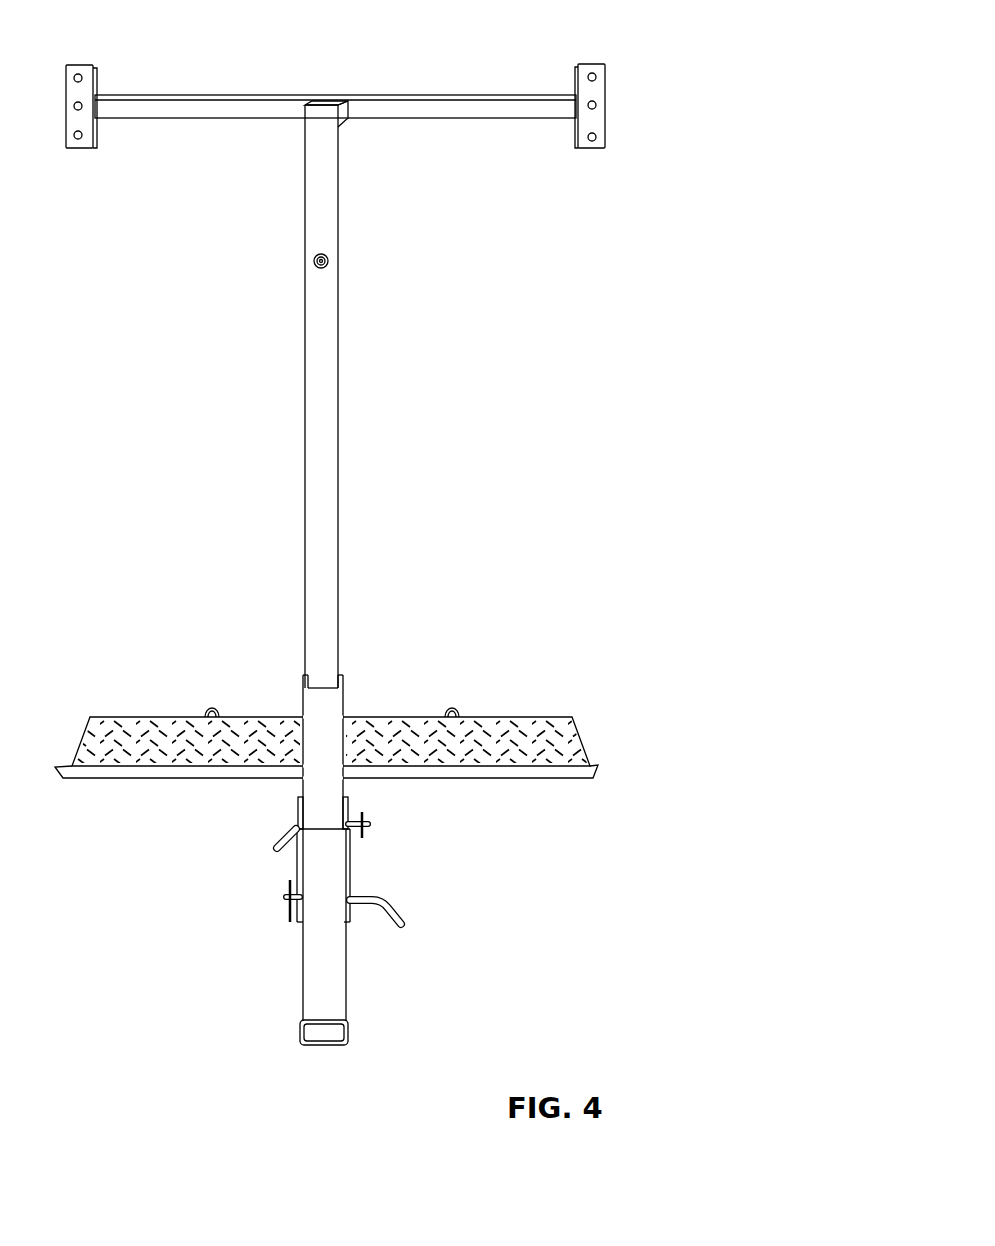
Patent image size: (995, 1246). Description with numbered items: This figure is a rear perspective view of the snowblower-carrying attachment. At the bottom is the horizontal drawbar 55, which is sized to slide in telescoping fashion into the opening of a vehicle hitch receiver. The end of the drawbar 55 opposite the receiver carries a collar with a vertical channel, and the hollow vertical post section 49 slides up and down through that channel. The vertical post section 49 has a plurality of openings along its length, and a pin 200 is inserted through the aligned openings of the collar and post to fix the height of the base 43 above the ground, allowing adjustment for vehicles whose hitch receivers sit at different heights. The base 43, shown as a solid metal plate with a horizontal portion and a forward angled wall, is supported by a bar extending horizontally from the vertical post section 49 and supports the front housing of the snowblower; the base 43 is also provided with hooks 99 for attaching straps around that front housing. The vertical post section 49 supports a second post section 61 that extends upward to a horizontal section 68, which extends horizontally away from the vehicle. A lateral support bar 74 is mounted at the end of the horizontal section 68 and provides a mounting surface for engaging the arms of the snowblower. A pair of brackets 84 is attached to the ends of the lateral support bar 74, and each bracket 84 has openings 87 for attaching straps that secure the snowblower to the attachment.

The lateral support bar 74 is at (412, 110).
The bracket 84 is at (598, 90).
The opening 87 is at (596, 107).
The horizontal section 68 is at (343, 115).
The second post section 61 is at (318, 400).
The vertical post section 49 is at (340, 706).
The hook 99 is at (454, 700).
The base 43 is at (545, 740).
The pin 200 is at (290, 832).
The drawbar 55 is at (322, 981).